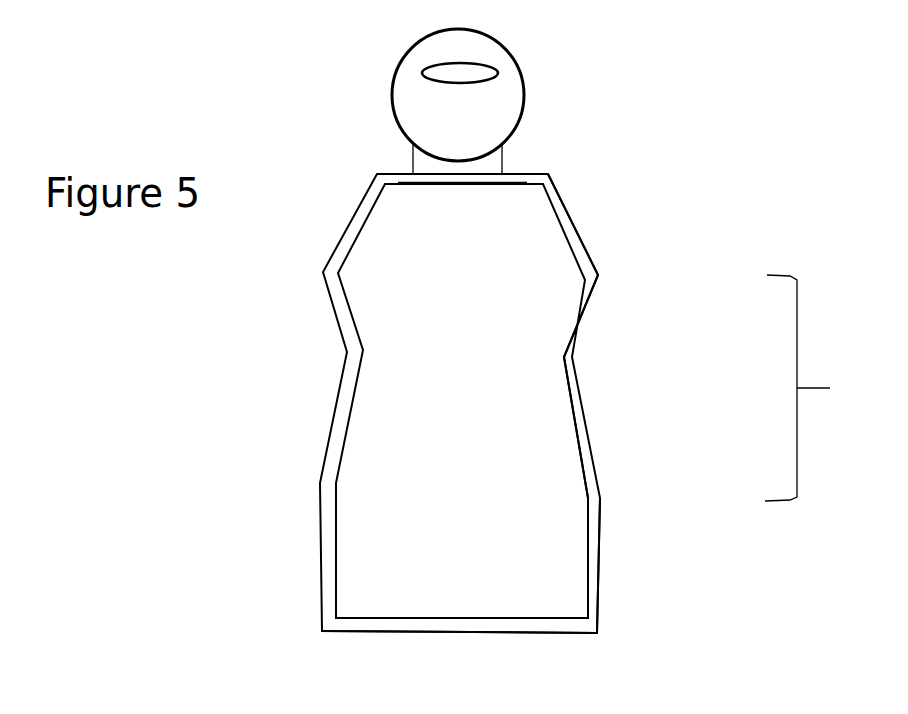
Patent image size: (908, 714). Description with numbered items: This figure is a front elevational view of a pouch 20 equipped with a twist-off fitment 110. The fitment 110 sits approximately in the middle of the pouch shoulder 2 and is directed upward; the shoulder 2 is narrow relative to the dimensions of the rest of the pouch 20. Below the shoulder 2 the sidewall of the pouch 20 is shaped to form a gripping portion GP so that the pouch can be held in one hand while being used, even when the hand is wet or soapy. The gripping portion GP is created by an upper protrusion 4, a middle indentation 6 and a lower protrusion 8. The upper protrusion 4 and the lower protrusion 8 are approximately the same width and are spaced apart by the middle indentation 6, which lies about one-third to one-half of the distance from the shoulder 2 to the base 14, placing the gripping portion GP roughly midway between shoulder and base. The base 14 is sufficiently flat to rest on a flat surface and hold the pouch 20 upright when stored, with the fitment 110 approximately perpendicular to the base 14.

The twist-off fitment 110 is at (372, 85).
The pouch 20 is at (327, 190).
The pouch shoulder 2 is at (563, 205).
The upper protrusion 4 is at (600, 275).
The middle indentation 6 is at (567, 357).
The lower protrusion 8 is at (593, 552).
The base 14 is at (323, 632).
The gripping portion GP is at (826, 388).